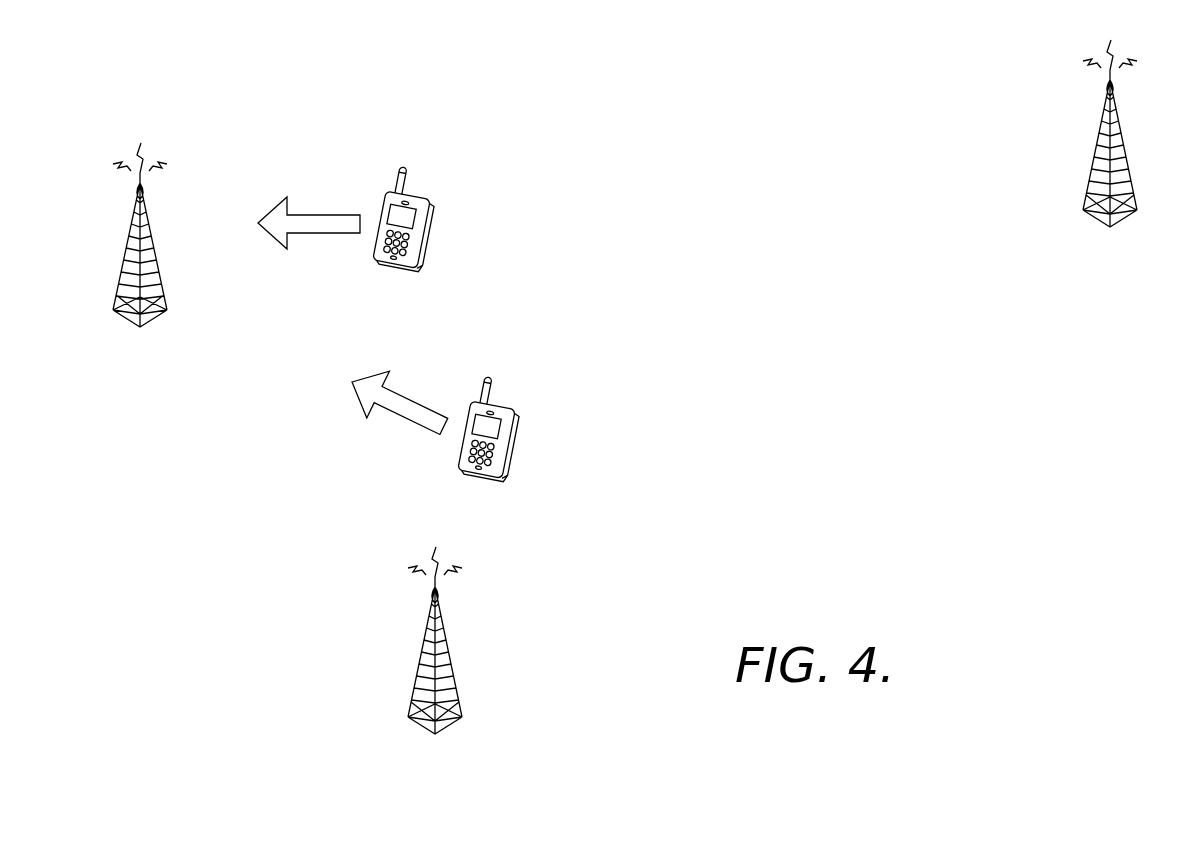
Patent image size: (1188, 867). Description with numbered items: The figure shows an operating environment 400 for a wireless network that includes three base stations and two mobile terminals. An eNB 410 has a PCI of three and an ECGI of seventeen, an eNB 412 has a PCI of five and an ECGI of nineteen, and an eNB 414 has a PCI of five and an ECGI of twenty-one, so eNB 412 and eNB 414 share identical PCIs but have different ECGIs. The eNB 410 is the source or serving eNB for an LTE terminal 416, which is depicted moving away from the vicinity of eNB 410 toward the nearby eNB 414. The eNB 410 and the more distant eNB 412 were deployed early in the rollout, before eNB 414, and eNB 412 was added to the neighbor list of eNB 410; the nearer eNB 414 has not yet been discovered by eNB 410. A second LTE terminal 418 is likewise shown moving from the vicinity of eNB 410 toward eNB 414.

The operating environment 400 is at (271, 52).
The eNB 410 is at (419, 665).
The eNB 412 is at (1094, 160).
The eNB 414 is at (125, 262).
The LTE terminal 416 is at (403, 268).
The LTE terminal 418 is at (487, 478).